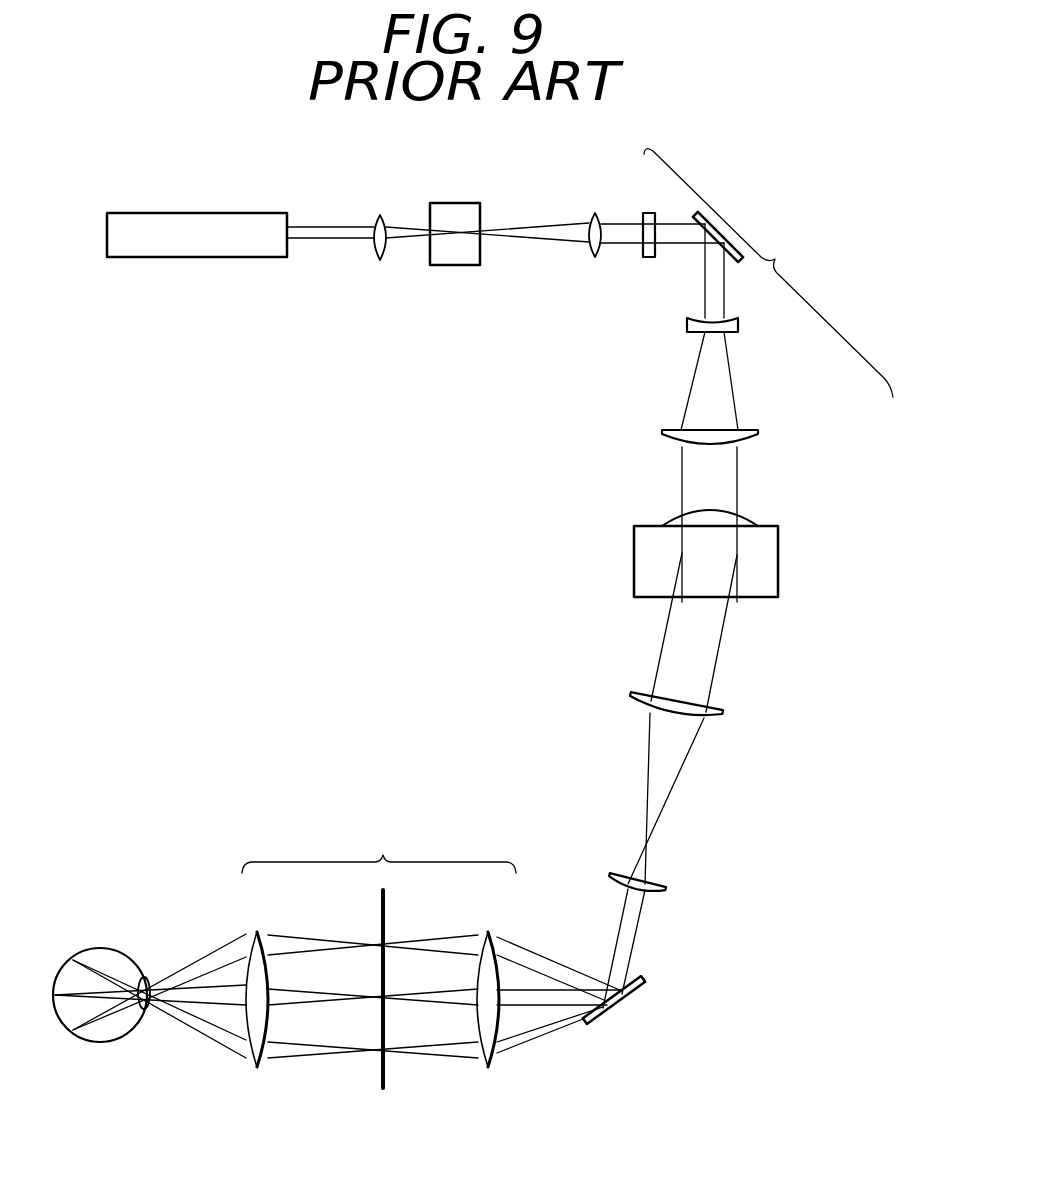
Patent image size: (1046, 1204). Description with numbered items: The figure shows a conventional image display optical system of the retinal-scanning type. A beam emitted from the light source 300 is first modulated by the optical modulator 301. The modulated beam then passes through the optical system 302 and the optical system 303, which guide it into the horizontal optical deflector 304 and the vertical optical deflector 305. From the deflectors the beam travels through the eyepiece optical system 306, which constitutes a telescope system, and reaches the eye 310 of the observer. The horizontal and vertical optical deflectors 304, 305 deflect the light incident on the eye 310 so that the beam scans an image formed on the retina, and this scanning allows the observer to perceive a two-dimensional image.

The light source 300 is at (188, 247).
The optical modulator 301 is at (453, 255).
The optical system 302 is at (768, 273).
The optical system 303 is at (667, 521).
The horizontal optical deflector 304 is at (640, 558).
The vertical optical deflector 305 is at (638, 992).
The eyepiece optical system 306 is at (379, 957).
The eye 310 is at (93, 950).